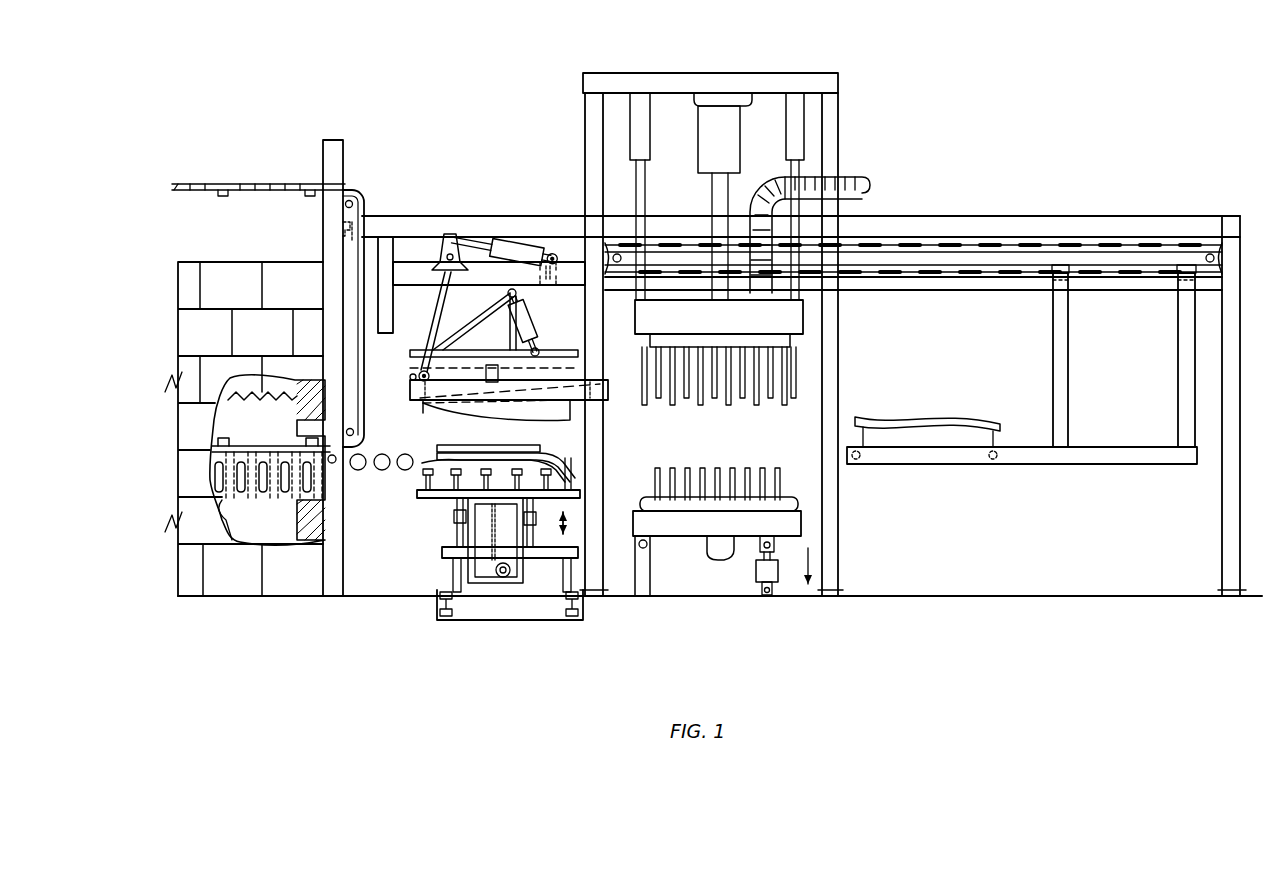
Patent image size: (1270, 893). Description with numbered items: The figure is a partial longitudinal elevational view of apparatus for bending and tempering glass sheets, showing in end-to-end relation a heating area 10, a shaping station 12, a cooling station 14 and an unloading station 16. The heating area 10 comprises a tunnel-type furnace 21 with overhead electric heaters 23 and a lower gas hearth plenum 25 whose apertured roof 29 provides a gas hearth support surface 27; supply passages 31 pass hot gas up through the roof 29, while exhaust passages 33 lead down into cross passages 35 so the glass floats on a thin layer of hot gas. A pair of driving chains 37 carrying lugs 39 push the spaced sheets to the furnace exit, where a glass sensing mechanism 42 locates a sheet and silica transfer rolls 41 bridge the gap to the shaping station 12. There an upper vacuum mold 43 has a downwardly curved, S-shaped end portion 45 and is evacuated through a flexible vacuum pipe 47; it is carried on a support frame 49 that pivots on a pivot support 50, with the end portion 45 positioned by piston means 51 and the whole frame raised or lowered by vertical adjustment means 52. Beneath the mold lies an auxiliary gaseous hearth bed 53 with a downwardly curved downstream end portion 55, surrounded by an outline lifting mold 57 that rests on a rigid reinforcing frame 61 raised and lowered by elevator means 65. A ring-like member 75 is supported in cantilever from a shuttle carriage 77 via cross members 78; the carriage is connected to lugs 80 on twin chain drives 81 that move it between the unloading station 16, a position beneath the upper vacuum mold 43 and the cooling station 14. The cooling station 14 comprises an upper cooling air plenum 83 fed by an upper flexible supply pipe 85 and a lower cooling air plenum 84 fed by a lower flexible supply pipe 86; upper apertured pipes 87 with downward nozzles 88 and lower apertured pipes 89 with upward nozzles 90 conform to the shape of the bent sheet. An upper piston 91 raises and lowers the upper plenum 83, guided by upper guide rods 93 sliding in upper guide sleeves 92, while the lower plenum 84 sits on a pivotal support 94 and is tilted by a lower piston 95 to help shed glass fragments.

The heating area 10 is at (281, 126).
The shaping station 12 is at (503, 108).
The cooling station 14 is at (747, 57).
The unloading station 16 is at (990, 124).
The tunnel-type furnace 21 is at (256, 600).
The overhead electric heaters 23 is at (262, 402).
The gas hearth plenum 25 is at (270, 526).
The gas hearth support surface 27 is at (246, 448).
The apertured roof 29 is at (226, 505).
The supply passages 31 is at (235, 500).
The exhaust passages 33 is at (215, 458).
The cross passages 35 is at (218, 478).
The driving chains 37 is at (340, 272).
The lugs 39 is at (304, 440).
The silica transfer rolls 41 is at (360, 470).
The glass sensing mechanism 42 is at (334, 468).
The upper vacuum mold 43 is at (597, 406).
The downwardly curved end portion 45 is at (548, 418).
The flexible vacuum pipe 47 is at (492, 365).
The support frame 49 is at (410, 388).
The pivot support 50 is at (416, 370).
The piston means 51 is at (536, 320).
The vertical adjustment means 52 is at (507, 243).
The auxiliary gaseous hearth bed 53 is at (456, 453).
The downwardly curved downstream end portion 55 is at (548, 462).
The outline lifting mold 57 is at (584, 466).
The rigid reinforcing frame 61 is at (442, 498).
The elevator means 65 is at (503, 580).
The ring-like member 75 is at (888, 440).
The shuttle carriage 77 is at (1045, 455).
The cross members 78 is at (996, 460).
The lugs 80 is at (1056, 267).
The twin chain drives 81 is at (932, 250).
The upper cooling air plenum 83 is at (667, 329).
The lower cooling air plenum 84 is at (720, 553).
The upper flexible supply pipe 85 is at (860, 178).
The lower flexible supply pipe 86 is at (718, 560).
The upper apertured pipes 87 is at (756, 343).
The nozzles 88 is at (743, 400).
The lower apertured pipes 89 is at (662, 510).
The nozzles 90 is at (737, 468).
The upper piston 91 is at (740, 150).
The upper guide sleeves 92 is at (651, 147).
The upper guide rods 93 is at (647, 208).
The pivotal support 94 is at (645, 548).
The lower piston 95 is at (760, 568).